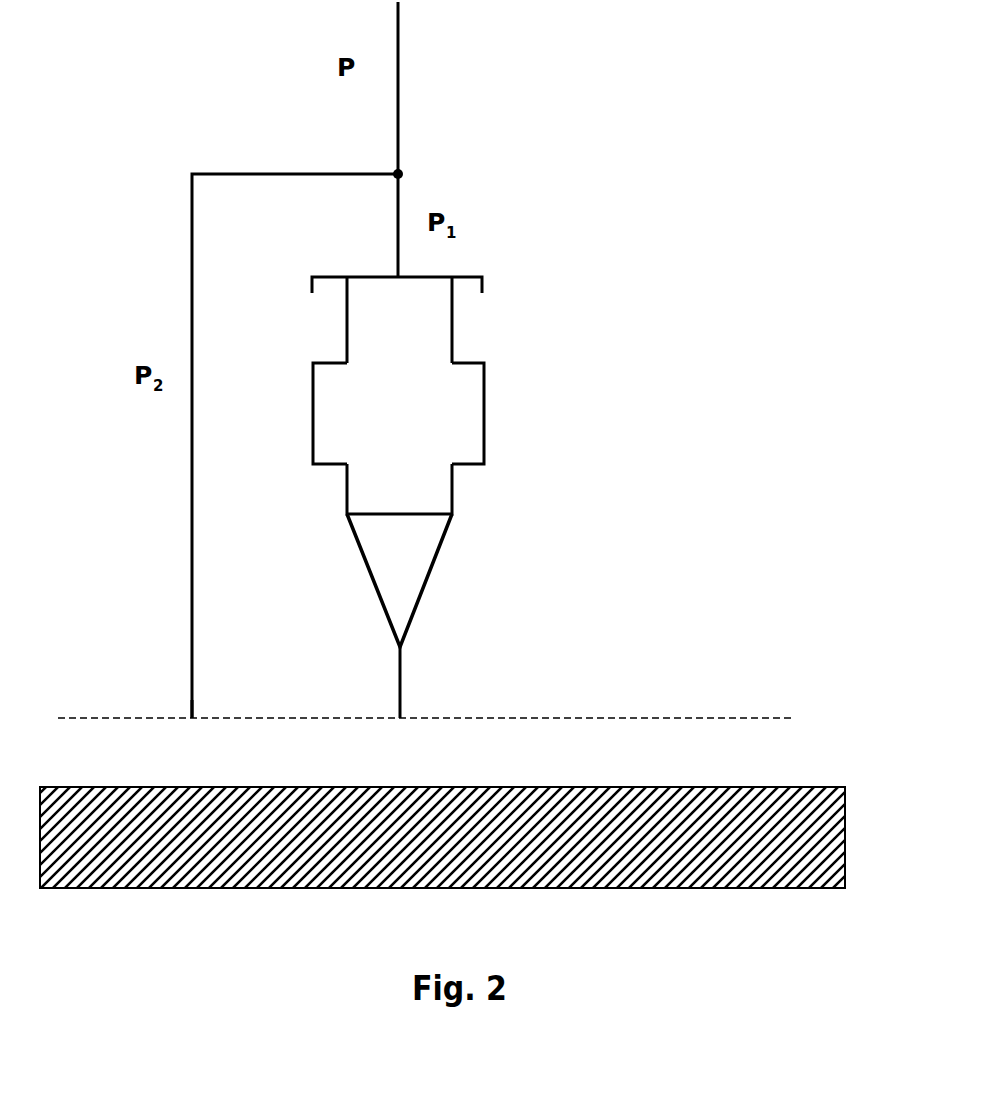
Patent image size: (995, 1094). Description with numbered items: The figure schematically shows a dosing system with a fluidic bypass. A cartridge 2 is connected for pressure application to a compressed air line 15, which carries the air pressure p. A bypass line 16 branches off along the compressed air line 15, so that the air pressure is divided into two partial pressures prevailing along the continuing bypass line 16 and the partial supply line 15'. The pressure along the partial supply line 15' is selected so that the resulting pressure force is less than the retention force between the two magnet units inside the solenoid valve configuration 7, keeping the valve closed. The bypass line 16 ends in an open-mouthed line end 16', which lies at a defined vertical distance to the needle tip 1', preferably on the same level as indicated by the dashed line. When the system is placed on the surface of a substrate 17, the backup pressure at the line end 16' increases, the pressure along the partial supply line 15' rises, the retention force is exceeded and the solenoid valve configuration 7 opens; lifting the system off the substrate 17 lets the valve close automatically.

The compressed air line 15 is at (451, 88).
The partial supply line 15' is at (447, 225).
The bypass line 16 is at (234, 446).
The open-mouthed line end 16' is at (131, 743).
The cartridge 2 is at (445, 462).
The solenoid valve configuration 7 is at (445, 413).
The needle tip 1' is at (450, 675).
The substrate 17 is at (725, 815).